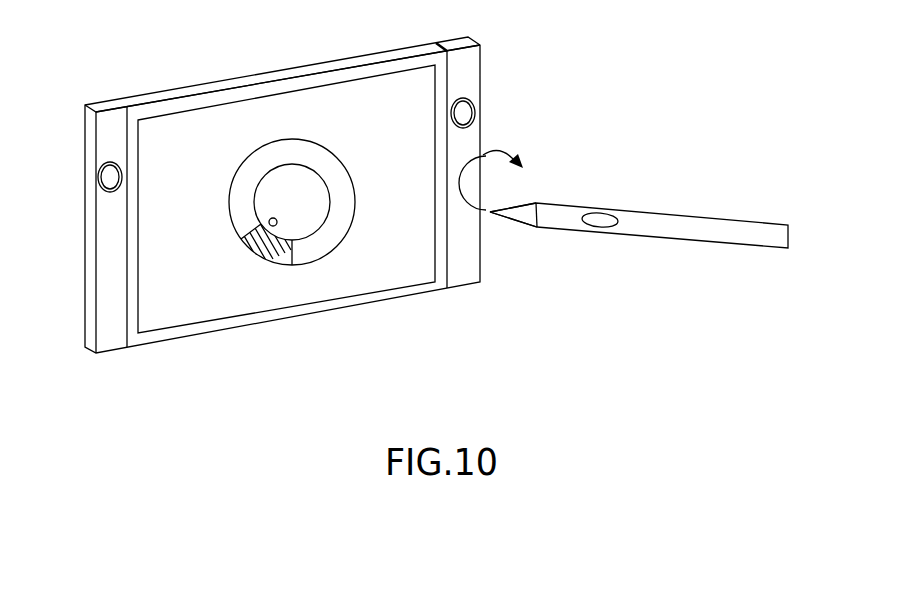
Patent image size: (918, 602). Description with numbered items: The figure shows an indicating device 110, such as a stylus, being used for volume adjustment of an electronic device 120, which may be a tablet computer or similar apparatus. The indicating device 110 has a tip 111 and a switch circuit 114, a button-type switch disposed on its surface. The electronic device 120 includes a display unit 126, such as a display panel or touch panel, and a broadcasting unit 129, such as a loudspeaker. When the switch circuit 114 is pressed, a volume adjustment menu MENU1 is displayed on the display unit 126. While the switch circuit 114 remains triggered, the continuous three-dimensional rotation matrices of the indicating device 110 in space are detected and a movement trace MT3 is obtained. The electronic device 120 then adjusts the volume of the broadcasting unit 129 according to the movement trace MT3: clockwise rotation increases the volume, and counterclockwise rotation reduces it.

The indicating device 110 is at (683, 215).
The tip 111 is at (492, 216).
The switch circuit 114 is at (598, 228).
The electronic device 120 is at (283, 67).
The display unit 126 is at (375, 69).
The broadcasting unit 129 is at (110, 162).
The movement trace MT3 is at (498, 152).
The volume adjustment menu MENU1 is at (335, 247).